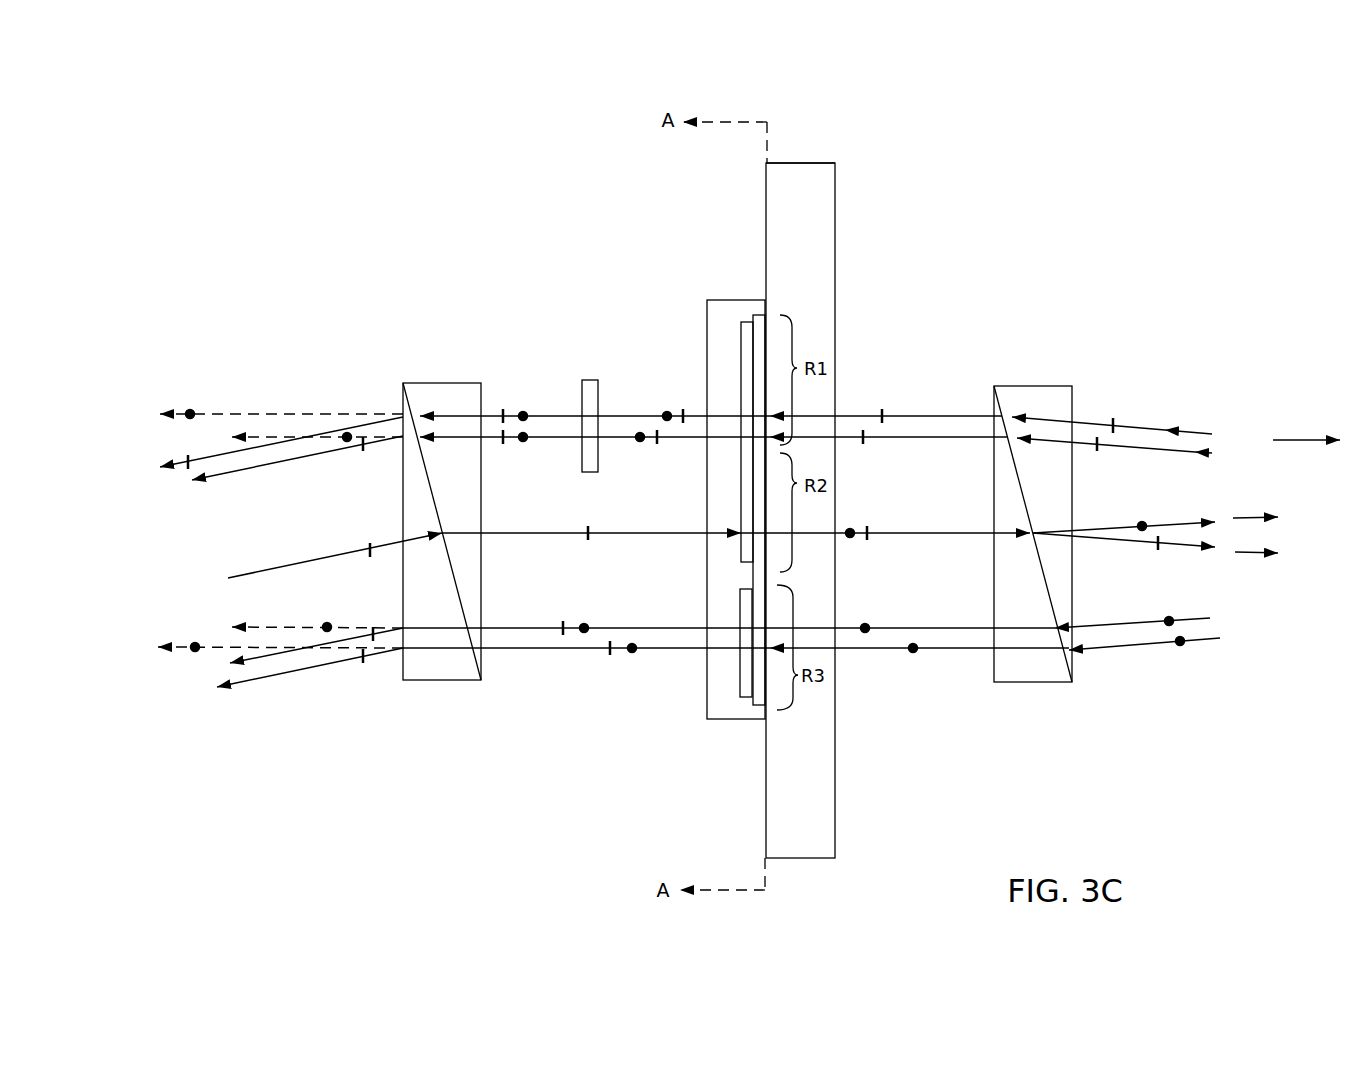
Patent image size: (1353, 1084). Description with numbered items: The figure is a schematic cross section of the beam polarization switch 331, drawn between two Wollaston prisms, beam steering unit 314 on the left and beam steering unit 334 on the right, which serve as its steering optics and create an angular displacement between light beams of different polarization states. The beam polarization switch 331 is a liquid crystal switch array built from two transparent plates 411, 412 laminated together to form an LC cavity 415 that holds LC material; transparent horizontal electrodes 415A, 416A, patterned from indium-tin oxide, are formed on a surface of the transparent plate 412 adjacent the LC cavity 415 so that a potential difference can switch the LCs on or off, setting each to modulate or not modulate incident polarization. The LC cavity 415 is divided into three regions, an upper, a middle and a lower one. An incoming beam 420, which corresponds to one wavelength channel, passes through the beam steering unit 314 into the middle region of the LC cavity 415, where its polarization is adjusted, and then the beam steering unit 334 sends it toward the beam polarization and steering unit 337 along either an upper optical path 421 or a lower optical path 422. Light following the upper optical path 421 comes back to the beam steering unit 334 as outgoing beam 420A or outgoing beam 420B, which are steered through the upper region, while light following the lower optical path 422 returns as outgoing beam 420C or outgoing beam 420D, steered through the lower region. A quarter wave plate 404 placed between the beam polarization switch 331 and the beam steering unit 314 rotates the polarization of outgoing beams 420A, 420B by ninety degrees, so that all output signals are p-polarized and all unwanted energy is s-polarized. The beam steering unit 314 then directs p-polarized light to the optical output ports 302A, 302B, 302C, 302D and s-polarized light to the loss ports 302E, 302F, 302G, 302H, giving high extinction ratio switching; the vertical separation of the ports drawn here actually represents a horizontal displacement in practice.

The optical output port 302A is at (151, 479).
The optical output port 302B is at (184, 504).
The optical output port 302C is at (221, 674).
The optical output port 302D is at (222, 713).
The loss port 302E is at (151, 421).
The loss port 302F is at (184, 447).
The loss port 302G is at (222, 634).
The loss port 302H is at (148, 656).
The beam steering unit 314 is at (428, 383).
The beam polarization switch 331 is at (797, 162).
The beam steering unit 334 is at (1050, 385).
The beam polarization and steering unit 337 is at (1306, 412).
The quarter wave plate 404 is at (589, 380).
The transparent plate 411 is at (836, 202).
The transparent plate 412 is at (723, 300).
The LC cavity 415 is at (763, 320).
The transparent horizontal electrode 415A is at (739, 663).
The transparent horizontal electrode 416A is at (742, 348).
The beam 420 is at (303, 562).
The outgoing beam 420A is at (636, 414).
The outgoing beam 420B is at (620, 440).
The outgoing beam 420C is at (655, 627).
The outgoing beam 420D is at (545, 648).
The upper optical path 421 is at (1235, 518).
The lower optical path 422 is at (1240, 555).